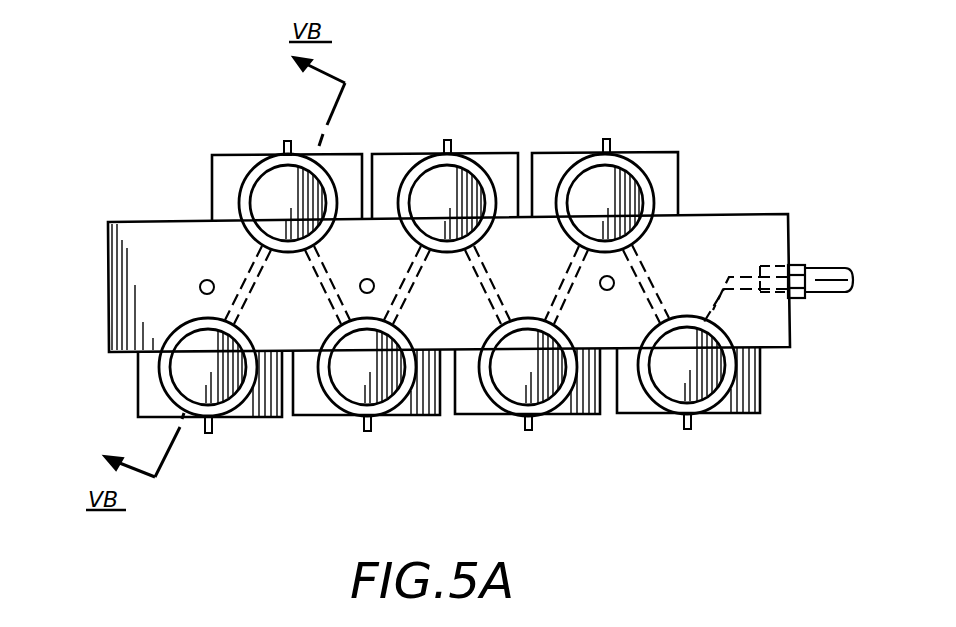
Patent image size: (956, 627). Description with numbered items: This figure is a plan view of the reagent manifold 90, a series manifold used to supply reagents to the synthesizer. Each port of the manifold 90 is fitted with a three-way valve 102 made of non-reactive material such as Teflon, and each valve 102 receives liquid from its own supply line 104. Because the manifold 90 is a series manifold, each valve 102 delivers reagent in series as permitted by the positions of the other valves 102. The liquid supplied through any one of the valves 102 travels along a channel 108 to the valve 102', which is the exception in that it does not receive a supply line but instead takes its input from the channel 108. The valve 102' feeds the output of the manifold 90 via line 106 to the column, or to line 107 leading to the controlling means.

The reagent manifold 90 is at (108, 292).
The three-way valve 102 is at (437, 290).
The valve 102' is at (701, 412).
The supply line 104 is at (286, 142).
The line 106 is at (688, 431).
The line 107 is at (822, 268).
The channel 108 is at (660, 292).